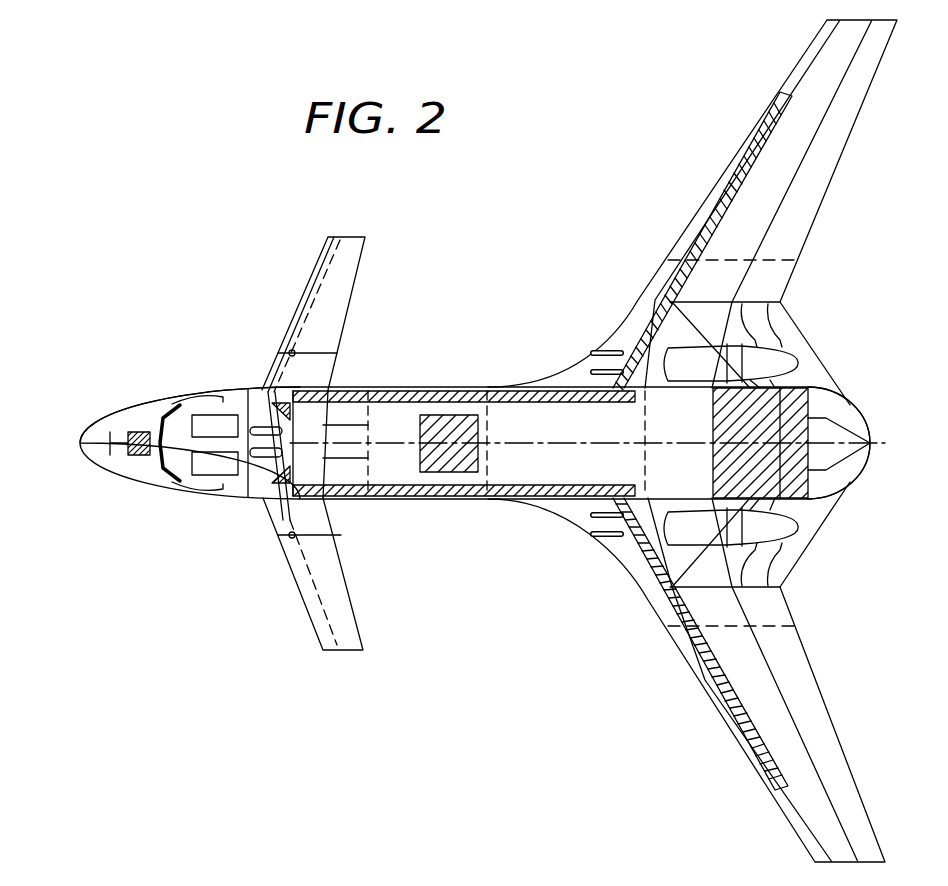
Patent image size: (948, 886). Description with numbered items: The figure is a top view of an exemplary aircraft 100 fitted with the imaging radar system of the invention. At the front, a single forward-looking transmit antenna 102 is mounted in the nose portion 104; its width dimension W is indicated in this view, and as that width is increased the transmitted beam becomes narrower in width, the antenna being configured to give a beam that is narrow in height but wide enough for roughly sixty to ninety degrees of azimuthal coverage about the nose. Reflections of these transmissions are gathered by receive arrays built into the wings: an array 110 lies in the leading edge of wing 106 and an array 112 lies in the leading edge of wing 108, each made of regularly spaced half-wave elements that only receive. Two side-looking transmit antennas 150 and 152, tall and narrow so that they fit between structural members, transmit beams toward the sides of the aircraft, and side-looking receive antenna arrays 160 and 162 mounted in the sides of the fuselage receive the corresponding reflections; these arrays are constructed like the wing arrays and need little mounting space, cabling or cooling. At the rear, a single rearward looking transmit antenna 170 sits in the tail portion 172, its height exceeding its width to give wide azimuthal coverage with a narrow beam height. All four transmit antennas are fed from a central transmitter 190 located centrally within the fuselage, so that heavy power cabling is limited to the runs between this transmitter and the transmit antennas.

The aircraft 100 is at (437, 369).
The forward-looking transmit antenna 102 is at (145, 457).
The nose portion 104 is at (110, 395).
The wing 106 is at (800, 63).
The wing 108 is at (790, 822).
The receive antenna array 110 is at (738, 162).
The receive antenna array 112 is at (712, 683).
The side-looking transmit antenna 150 is at (276, 500).
The side-looking transmit antenna 152 is at (272, 398).
The side-looking receive antenna array 160 is at (455, 497).
The side-looking receive antenna array 162 is at (470, 389).
The rearward looking transmit antenna 170 is at (832, 413).
The tail portion 172 is at (855, 485).
The central transmitter 190 is at (420, 462).
The width dimension W is at (92, 430).